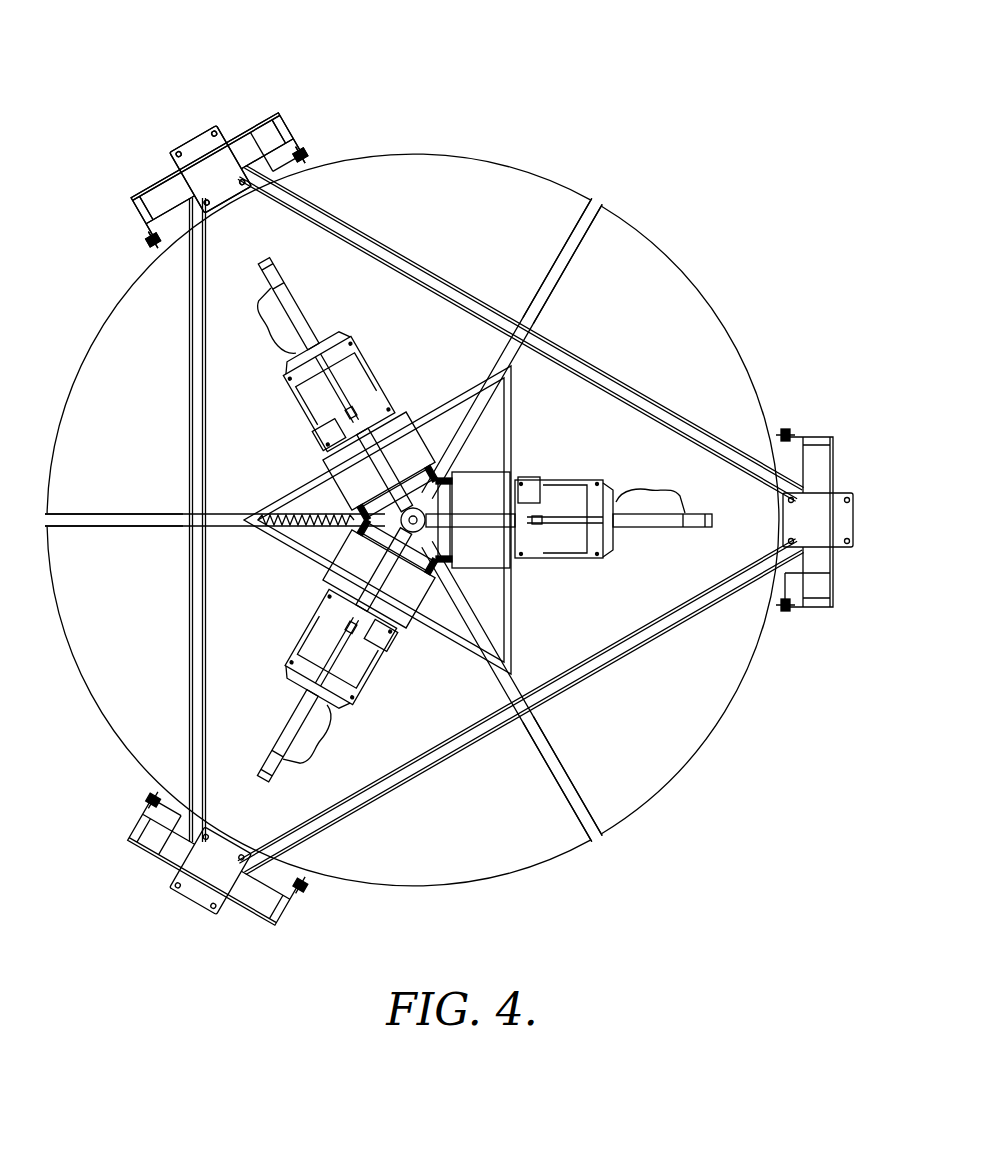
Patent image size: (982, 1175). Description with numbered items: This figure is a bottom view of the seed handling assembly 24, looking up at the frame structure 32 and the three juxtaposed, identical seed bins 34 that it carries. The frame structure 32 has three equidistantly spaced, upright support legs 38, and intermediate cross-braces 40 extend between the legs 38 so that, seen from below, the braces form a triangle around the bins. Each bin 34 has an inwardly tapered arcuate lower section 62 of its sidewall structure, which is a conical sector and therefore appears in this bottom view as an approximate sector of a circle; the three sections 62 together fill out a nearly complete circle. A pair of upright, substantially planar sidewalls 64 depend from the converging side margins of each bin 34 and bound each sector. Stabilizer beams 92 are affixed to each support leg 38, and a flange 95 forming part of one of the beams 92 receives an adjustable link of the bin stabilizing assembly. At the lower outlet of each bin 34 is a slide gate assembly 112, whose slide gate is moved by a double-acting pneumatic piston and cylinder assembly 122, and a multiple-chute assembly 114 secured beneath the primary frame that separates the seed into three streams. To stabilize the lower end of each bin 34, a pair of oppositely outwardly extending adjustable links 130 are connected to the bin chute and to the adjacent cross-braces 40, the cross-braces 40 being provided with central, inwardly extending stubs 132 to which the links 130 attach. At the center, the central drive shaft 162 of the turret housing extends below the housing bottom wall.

The seed handling assembly 24 is at (449, 488).
The frame structure 32 is at (146, 156).
The seed bin 34 is at (690, 243).
The support leg 38 is at (197, 148).
The cross-brace 40 is at (362, 244).
The lower section of sidewall structure 62 is at (364, 519).
The sidewall 64 is at (557, 264).
The stabilizer beam 92 is at (245, 140).
The flange 95 is at (281, 142).
The slide gate assembly 112 is at (293, 405).
The multiple-chute assembly 114 is at (405, 397).
The pneumatic piston and cylinder assembly 122 is at (292, 303).
The adjustable link 130 is at (450, 396).
The stub 132 is at (511, 373).
The central drive shaft 162 is at (421, 516).